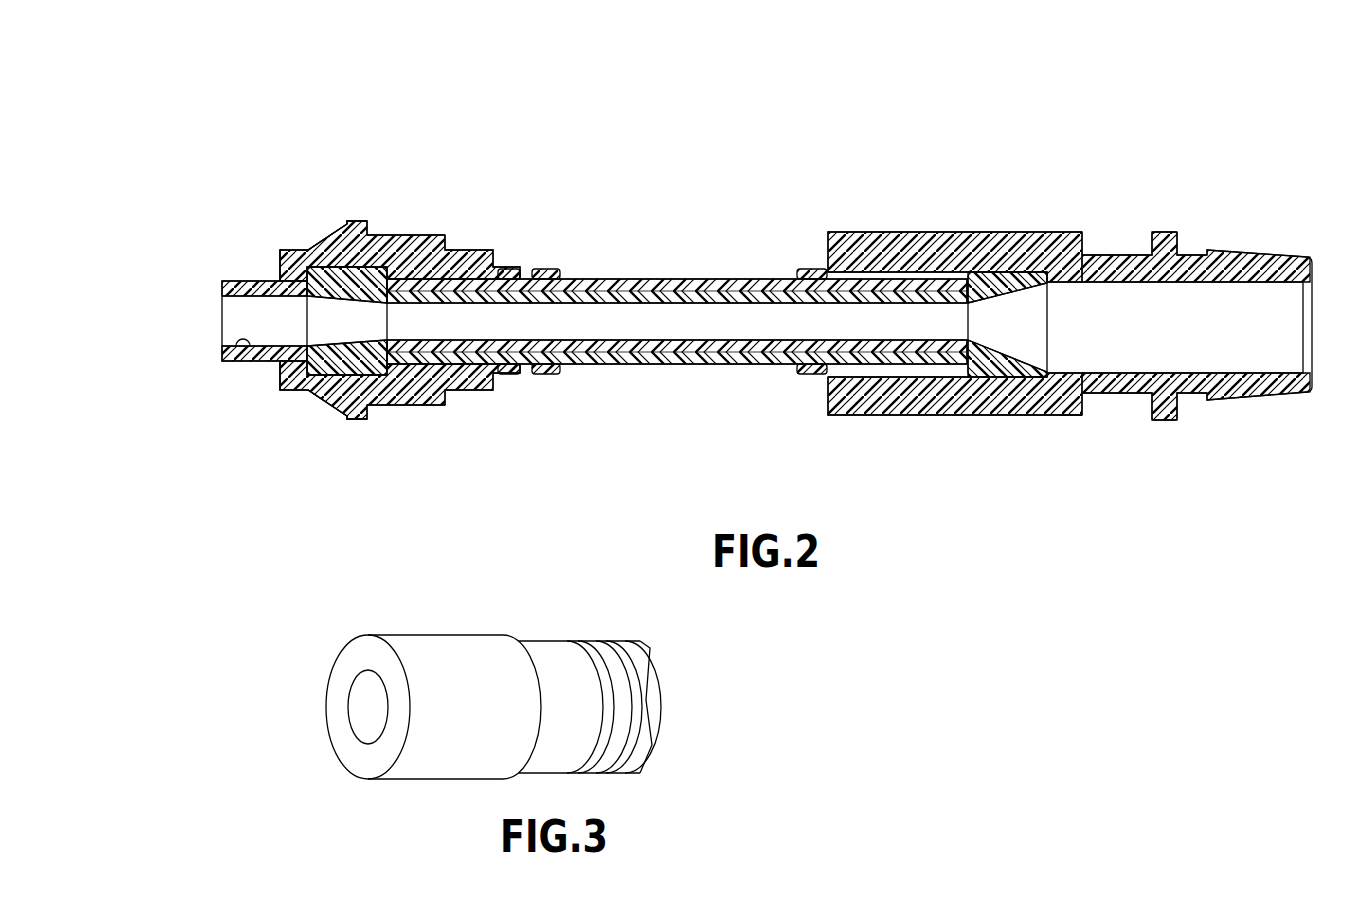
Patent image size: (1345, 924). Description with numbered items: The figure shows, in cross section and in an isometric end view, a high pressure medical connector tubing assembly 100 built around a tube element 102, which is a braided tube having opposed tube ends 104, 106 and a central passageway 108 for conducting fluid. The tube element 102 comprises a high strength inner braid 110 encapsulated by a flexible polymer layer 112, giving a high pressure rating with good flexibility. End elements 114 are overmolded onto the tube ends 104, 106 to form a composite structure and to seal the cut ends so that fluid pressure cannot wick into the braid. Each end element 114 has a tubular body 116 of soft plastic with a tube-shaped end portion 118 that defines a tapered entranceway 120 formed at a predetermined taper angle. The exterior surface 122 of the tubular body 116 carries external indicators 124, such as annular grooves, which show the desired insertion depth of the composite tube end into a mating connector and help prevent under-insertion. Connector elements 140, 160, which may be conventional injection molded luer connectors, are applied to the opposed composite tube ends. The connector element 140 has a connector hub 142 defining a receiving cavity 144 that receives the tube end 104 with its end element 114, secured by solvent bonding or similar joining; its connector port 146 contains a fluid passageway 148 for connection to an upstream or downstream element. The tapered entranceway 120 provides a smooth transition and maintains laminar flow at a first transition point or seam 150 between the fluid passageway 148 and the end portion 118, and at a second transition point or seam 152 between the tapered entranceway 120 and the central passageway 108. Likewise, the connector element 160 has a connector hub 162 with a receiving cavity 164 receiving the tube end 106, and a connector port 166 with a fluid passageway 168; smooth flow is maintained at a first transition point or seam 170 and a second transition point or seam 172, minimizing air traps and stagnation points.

In FIG. 2, the high pressure medical connector tubing assembly 100 is at (616, 106).
In FIG. 2, the tube element 102 is at (660, 362).
In FIG. 3, the tube element 102 is at (370, 598).
In FIG. 2, the tube end 104 is at (367, 372).
In FIG. 3, the tube end 104 is at (353, 755).
In FIG. 2, the tube end 106 is at (957, 375).
In FIG. 2, the central passageway 108 is at (740, 334).
In FIG. 3, the central passageway 108 is at (352, 705).
In FIG. 2, the inner braid 110 is at (738, 297).
In FIG. 2, the flexible polymer layer 112 is at (666, 288).
In FIG. 3, the flexible polymer layer 112 is at (455, 655).
In FIG. 2, the end element 114 is at (783, 250).
In FIG. 2, the tubular body 116 is at (356, 378).
In FIG. 2, the end portion 118 is at (332, 368).
In FIG. 2, the tapered entranceway 120 is at (298, 345).
In FIG. 2, the exterior surface 122 is at (548, 268).
In FIG. 2, the external indicator 124 is at (500, 268).
In FIG. 3, the external indicator 124 is at (627, 665).
In FIG. 2, the connector element 140 is at (356, 154).
In FIG. 2, the connector hub 142 is at (425, 245).
In FIG. 2, the receiving cavity 144 is at (373, 275).
In FIG. 2, the connector port 146 is at (232, 358).
In FIG. 2, the fluid passageway 148 is at (240, 333).
In FIG. 2, the first transition point or seam 150 is at (308, 318).
In FIG. 2, the second transition point or seam 152 is at (385, 322).
In FIG. 2, the connector element 160 is at (1106, 158).
In FIG. 2, the connector hub 162 is at (845, 415).
In FIG. 2, the receiving cavity 164 is at (1020, 245).
In FIG. 2, the connector port 166 is at (1199, 398).
In FIG. 2, the fluid passageway 168 is at (1140, 252).
In FIG. 2, the first transition point or seam 170 is at (1015, 378).
In FIG. 2, the second transition point or seam 172 is at (970, 300).